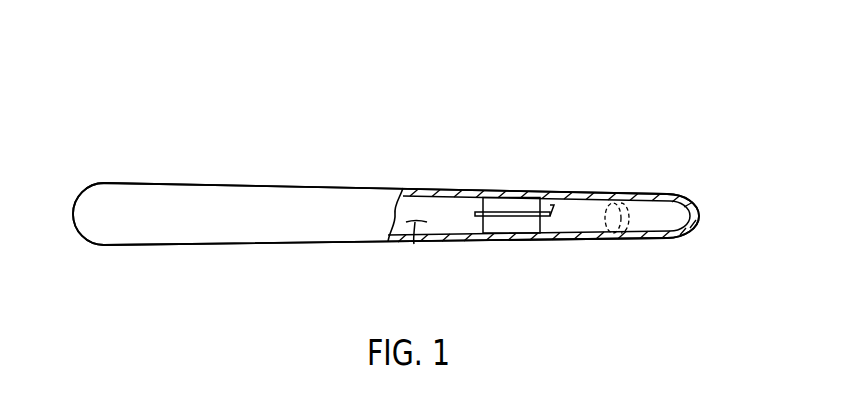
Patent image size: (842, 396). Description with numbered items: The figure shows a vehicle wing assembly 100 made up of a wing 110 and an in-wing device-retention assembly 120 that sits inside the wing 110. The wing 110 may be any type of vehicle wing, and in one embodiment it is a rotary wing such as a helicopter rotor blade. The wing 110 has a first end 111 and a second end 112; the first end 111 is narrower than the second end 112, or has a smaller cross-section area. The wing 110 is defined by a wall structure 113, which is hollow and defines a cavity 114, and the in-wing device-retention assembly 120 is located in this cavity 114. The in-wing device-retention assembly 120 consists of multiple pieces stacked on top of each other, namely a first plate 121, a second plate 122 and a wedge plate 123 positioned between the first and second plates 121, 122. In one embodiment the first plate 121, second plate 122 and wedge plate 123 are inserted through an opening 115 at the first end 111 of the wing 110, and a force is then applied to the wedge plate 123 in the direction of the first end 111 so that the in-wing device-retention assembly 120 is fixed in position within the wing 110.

The vehicle wing assembly 100 is at (706, 85).
The wing 110 is at (290, 185).
The first end 111 is at (703, 207).
The second end 112 is at (77, 195).
The wall structure 113 is at (578, 238).
The cavity 114 is at (414, 244).
The opening 115 is at (642, 222).
The in-wing device-retention assembly 120 is at (473, 207).
The first plate 121 is at (525, 200).
The second plate 122 is at (533, 224).
The wedge plate 123 is at (550, 206).